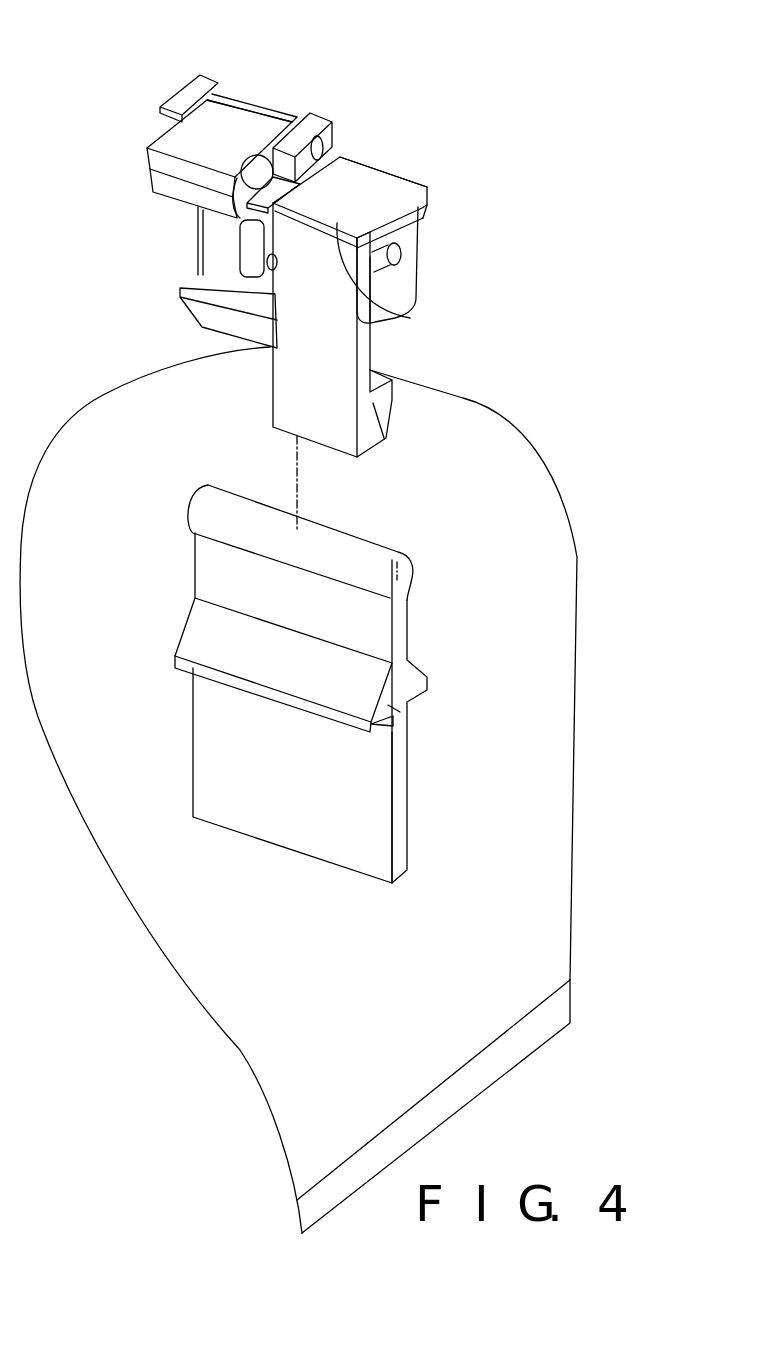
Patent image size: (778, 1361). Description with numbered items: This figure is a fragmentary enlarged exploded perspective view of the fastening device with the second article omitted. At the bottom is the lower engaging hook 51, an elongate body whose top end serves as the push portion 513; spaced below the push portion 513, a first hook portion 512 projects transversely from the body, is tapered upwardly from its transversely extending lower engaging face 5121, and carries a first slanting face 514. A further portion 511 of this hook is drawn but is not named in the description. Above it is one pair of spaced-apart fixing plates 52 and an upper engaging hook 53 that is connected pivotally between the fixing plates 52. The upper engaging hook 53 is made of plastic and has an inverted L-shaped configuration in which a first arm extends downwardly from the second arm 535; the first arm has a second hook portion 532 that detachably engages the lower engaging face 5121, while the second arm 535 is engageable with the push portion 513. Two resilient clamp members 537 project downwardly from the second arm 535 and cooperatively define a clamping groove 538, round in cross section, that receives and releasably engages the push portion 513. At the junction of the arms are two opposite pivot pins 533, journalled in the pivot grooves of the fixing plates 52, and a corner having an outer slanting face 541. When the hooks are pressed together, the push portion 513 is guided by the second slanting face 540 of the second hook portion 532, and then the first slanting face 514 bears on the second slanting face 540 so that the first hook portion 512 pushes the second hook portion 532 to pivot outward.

The lower engaging hook 51 is at (229, 873).
The bottom plate 511 is at (398, 810).
The first hook portion 512 is at (380, 758).
The lower engaging face 5121 is at (412, 690).
The push portion 513 is at (400, 553).
The first slanting face 514 is at (412, 665).
The fixing plate 52 is at (437, 300).
The upper engaging hook 53 is at (228, 71).
The second hook portion 532 is at (373, 407).
The pivot pin 533 is at (417, 267).
The second arm 535 is at (358, 130).
The resilient clamp member 537 is at (422, 214).
The clamping groove 538 is at (427, 188).
The second slanting face 540 is at (390, 402).
The outer slanting face 541 is at (271, 110).